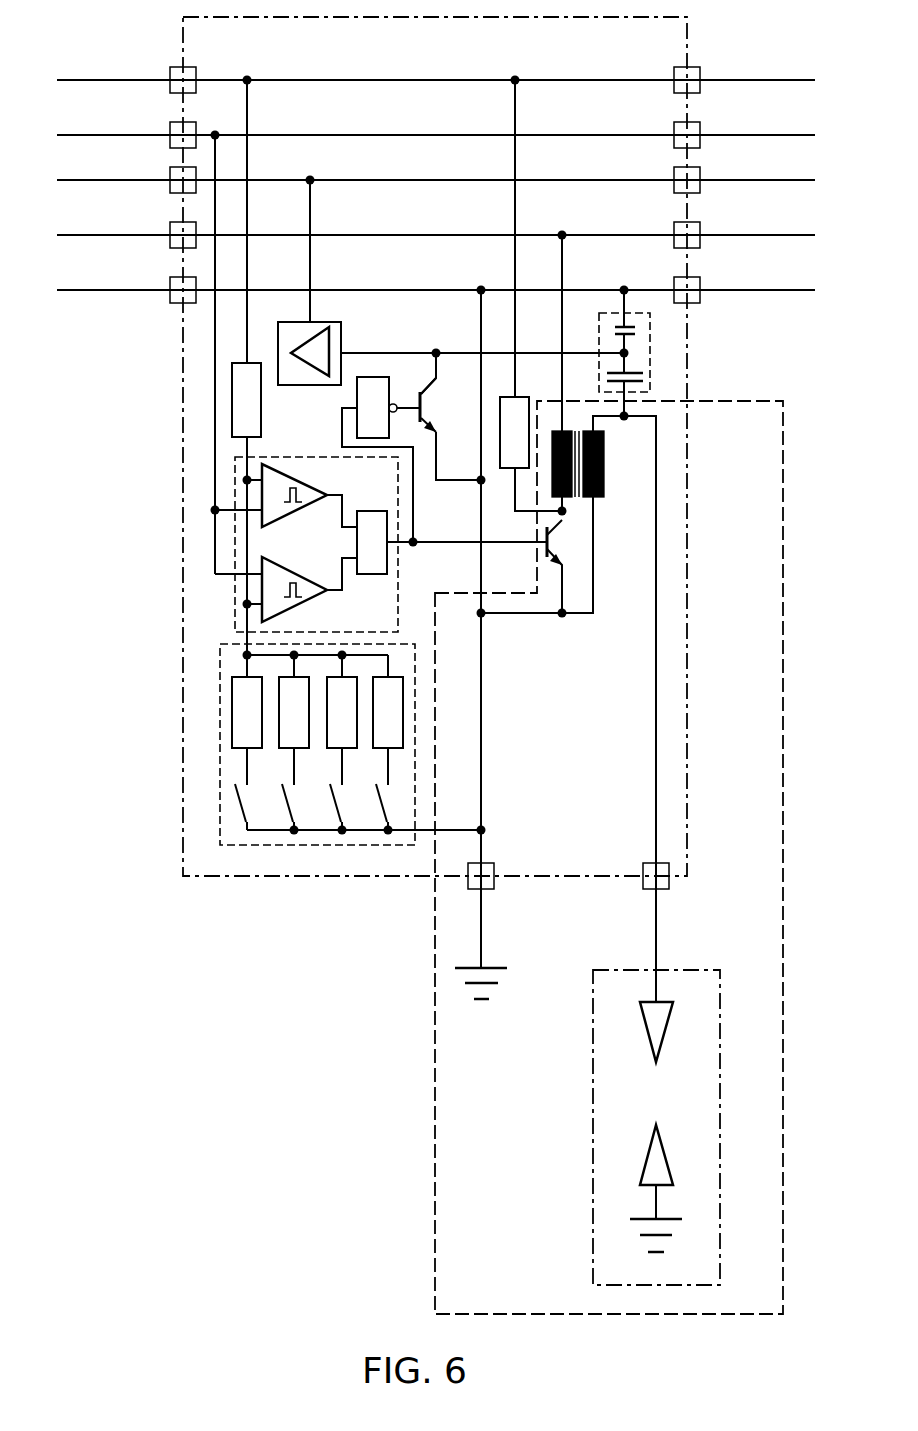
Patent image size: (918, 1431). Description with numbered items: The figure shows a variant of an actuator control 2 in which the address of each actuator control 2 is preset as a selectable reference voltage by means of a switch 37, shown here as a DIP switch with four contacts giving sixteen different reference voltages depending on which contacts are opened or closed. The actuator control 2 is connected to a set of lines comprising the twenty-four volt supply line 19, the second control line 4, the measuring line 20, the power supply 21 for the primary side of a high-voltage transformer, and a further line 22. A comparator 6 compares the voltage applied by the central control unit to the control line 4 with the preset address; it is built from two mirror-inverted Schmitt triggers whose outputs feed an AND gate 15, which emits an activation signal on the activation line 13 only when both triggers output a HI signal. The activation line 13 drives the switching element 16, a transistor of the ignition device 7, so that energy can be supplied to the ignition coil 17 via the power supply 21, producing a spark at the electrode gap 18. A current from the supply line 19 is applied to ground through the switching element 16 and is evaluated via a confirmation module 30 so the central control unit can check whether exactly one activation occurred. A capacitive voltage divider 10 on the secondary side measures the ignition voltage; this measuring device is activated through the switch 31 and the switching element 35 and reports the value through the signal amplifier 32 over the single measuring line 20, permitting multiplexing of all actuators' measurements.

The supply line 19 is at (757, 80).
The second control line 4 is at (757, 135).
The measuring line 20 is at (757, 180).
The power supply for the primary side 21 is at (757, 235).
The line 22 is at (757, 290).
The actuator control 2 is at (183, 418).
The signal amplifier 32 is at (302, 332).
The switch 31 is at (370, 390).
The switching element 35 is at (416, 368).
The confirmation module 30 is at (521, 408).
The voltage divider 10 is at (650, 356).
The ignition coil 17 is at (620, 472).
The switching element 16 is at (584, 545).
The comparator 6 is at (263, 544).
The AND gate 15 is at (375, 565).
The switch 37 is at (220, 744).
The activation line 13 is at (532, 618).
The ignition device 7 is at (785, 858).
The electrode gap 18 is at (640, 1078).